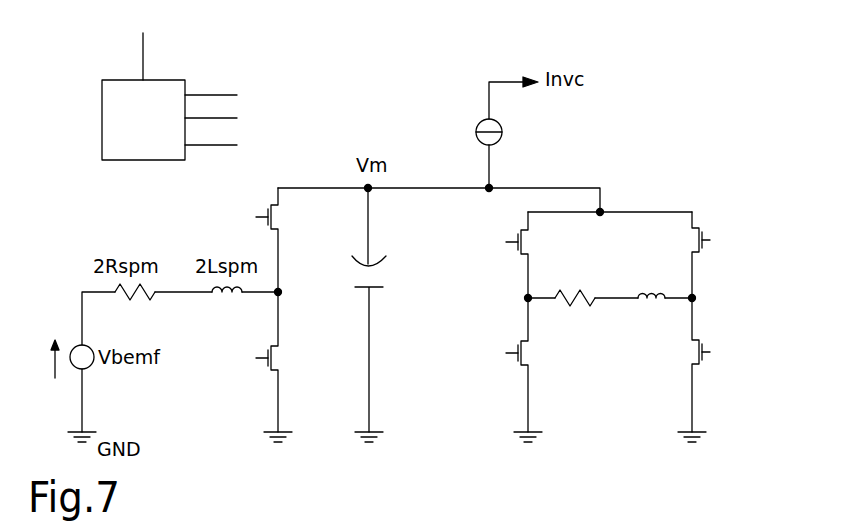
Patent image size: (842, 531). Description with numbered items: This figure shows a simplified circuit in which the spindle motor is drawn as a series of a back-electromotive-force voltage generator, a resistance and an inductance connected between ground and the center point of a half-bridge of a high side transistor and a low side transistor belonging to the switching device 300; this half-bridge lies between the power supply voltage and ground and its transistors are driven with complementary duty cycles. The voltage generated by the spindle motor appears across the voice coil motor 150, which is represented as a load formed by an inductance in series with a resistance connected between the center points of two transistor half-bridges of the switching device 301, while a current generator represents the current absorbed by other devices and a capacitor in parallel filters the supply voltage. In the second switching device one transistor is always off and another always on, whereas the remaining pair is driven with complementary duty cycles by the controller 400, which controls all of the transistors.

The controller 400 is at (102, 98).
The switching device 300 is at (322, 420).
The switching device 301 is at (493, 424).
The voice coil motor 150 is at (598, 360).